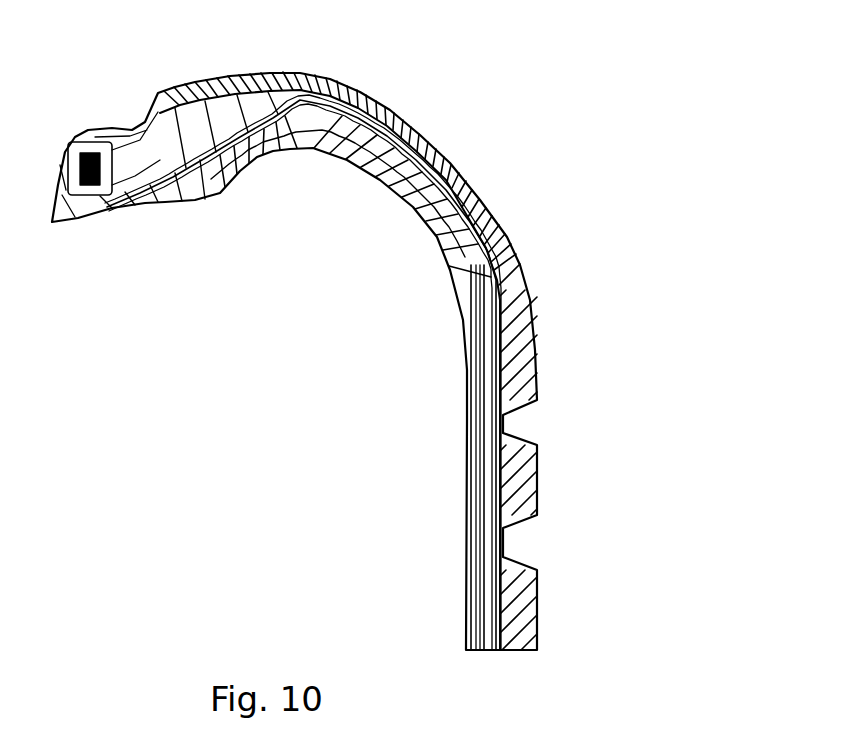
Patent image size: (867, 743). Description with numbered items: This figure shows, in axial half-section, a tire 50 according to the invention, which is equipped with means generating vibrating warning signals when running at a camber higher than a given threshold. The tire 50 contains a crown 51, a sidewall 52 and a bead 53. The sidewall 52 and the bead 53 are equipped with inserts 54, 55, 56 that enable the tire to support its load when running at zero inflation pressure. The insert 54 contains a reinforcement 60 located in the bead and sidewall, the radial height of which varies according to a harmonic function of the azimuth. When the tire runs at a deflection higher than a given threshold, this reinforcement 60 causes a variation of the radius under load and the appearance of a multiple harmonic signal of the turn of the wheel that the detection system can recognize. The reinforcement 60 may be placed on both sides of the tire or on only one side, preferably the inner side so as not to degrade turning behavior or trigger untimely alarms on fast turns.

The tire 50 is at (560, 136).
The crown 51 is at (560, 477).
The sidewall 52 is at (394, 103).
The bead 53 is at (137, 108).
The insert 54 is at (150, 205).
The insert 55 is at (248, 113).
The insert 56 is at (302, 120).
The reinforcement 60 is at (207, 188).